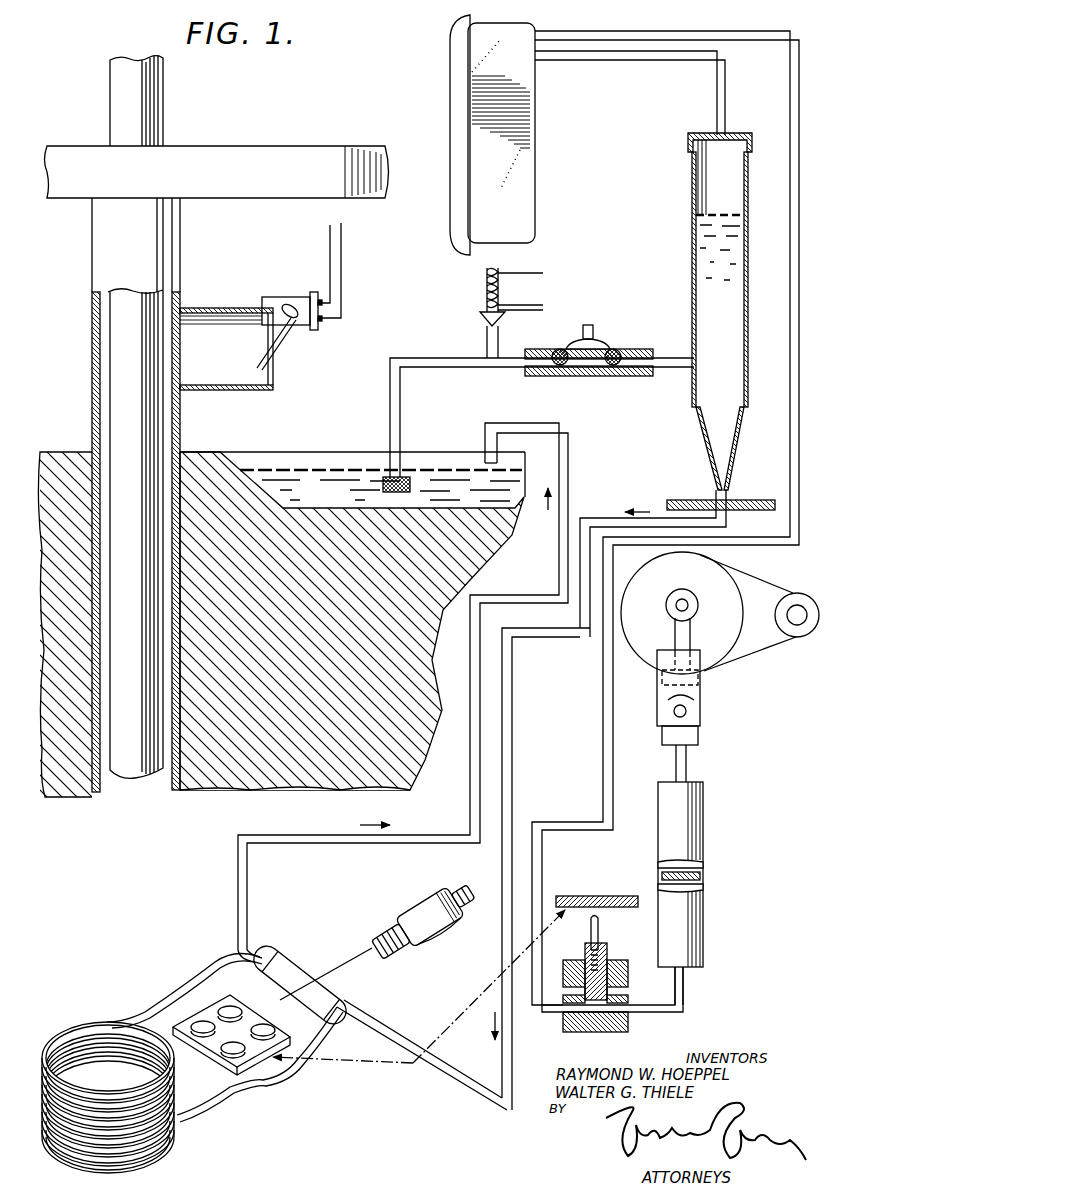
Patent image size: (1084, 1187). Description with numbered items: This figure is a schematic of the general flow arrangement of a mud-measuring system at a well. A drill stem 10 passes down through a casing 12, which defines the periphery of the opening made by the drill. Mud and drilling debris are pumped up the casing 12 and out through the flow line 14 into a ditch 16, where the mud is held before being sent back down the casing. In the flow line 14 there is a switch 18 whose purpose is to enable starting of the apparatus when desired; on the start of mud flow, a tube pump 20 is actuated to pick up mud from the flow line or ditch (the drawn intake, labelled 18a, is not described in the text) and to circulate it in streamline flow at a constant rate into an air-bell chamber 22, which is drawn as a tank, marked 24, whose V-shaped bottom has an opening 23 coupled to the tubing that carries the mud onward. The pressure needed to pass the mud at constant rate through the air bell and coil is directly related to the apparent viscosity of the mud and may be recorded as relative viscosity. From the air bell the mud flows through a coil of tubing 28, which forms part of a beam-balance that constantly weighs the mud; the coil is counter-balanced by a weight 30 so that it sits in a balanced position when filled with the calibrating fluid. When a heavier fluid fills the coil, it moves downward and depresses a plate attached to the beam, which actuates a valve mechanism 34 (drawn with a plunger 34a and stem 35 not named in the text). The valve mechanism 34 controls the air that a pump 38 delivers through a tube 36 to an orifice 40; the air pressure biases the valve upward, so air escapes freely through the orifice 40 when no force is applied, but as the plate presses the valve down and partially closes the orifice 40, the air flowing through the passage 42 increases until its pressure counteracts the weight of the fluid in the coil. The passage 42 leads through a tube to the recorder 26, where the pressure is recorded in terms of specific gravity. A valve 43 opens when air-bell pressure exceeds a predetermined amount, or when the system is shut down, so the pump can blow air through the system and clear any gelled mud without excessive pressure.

The drill stem 10 is at (124, 103).
The casing 12 is at (92, 388).
The flow line 14 is at (208, 325).
The ditch 16 is at (268, 424).
The switch 18 is at (290, 266).
The screen 18a is at (364, 397).
The tube pump 20 is at (633, 349).
The air-bell chamber 22 is at (693, 224).
The opening 23 is at (512, 695).
The tank 24 is at (692, 174).
The recorder 26 is at (528, 195).
The coil of tubing 28 is at (110, 1020).
The weight 30 is at (418, 892).
The valve mechanism 34 is at (608, 956).
The valve plunger 34a is at (588, 965).
The valve stem 35 is at (600, 928).
The tube 36 is at (684, 992).
The pump 38 is at (703, 808).
The orifice 40 is at (622, 992).
The passage 42 is at (549, 1013).
The valve 43 is at (484, 292).